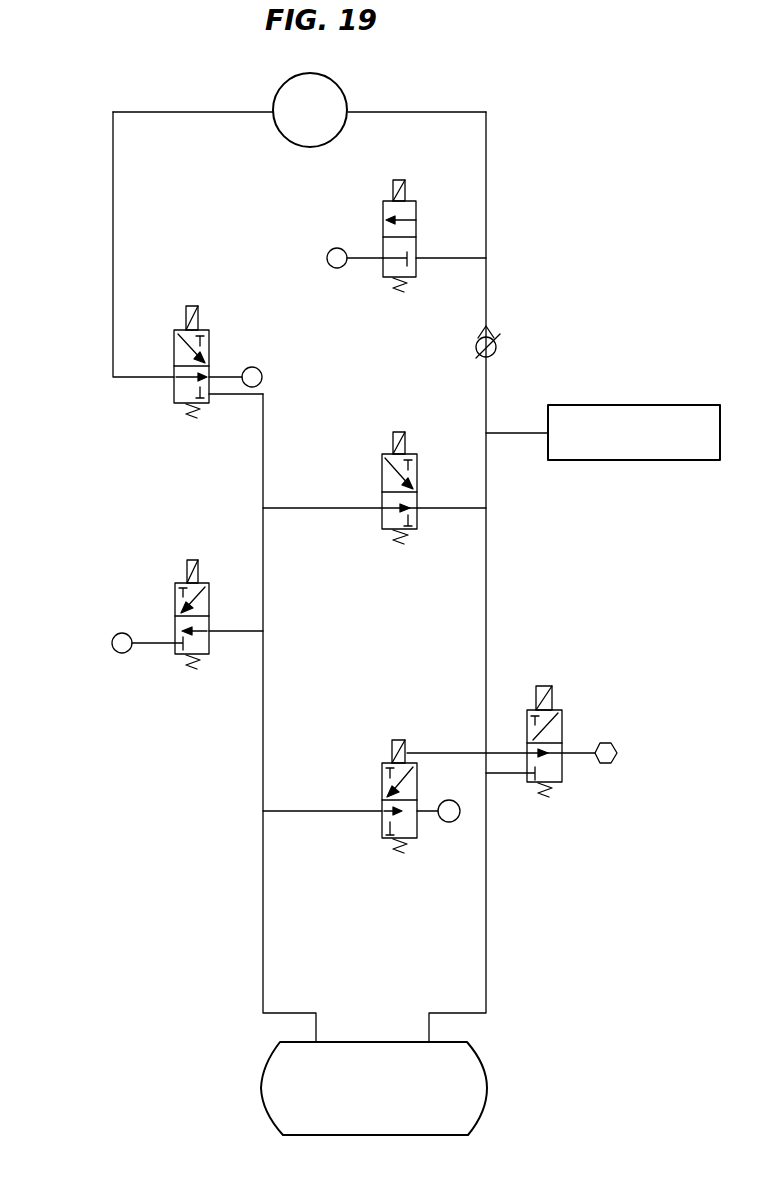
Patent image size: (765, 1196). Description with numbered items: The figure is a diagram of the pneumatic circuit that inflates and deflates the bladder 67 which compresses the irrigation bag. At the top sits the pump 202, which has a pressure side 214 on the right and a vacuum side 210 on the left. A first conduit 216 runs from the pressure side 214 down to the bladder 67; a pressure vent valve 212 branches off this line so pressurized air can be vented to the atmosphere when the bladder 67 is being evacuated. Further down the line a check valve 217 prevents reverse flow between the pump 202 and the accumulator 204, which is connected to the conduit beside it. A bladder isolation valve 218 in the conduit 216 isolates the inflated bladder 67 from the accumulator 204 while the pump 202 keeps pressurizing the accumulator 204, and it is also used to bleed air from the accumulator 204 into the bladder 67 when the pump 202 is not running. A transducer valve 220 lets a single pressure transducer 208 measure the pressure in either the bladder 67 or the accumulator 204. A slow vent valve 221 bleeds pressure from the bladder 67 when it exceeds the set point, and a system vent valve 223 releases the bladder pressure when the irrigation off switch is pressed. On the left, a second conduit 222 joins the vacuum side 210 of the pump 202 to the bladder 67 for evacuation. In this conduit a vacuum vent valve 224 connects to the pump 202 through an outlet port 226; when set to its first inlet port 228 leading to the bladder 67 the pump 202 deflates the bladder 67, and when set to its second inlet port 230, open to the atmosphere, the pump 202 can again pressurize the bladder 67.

The bladder 67 is at (487, 1082).
The pump 202 is at (292, 139).
The accumulator 204 is at (617, 397).
The pressure transducer 208 is at (615, 745).
The vacuum side 210 is at (273, 110).
The pressure vent valve 212 is at (383, 227).
The pressure side 214 is at (351, 110).
The first conduit 216 is at (487, 174).
The check valve 217 is at (494, 346).
The bladder isolation valve 218 is at (382, 473).
The transducer valve 220 is at (563, 782).
The slow vent valve 221 is at (175, 655).
The second conduit 222 is at (113, 320).
The system vent valve 223 is at (413, 838).
The vacuum vent valve 224 is at (174, 404).
The outlet port 226 is at (172, 380).
The first inlet port 228 is at (209, 394).
The second inlet port 230 is at (262, 377).